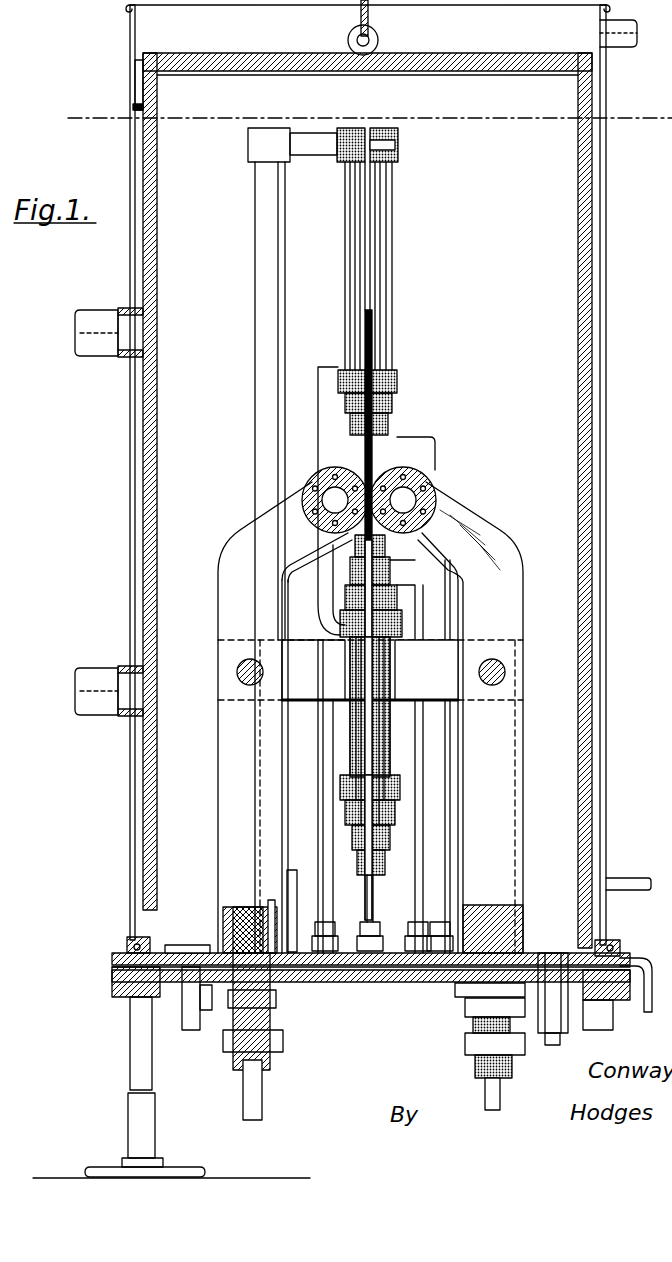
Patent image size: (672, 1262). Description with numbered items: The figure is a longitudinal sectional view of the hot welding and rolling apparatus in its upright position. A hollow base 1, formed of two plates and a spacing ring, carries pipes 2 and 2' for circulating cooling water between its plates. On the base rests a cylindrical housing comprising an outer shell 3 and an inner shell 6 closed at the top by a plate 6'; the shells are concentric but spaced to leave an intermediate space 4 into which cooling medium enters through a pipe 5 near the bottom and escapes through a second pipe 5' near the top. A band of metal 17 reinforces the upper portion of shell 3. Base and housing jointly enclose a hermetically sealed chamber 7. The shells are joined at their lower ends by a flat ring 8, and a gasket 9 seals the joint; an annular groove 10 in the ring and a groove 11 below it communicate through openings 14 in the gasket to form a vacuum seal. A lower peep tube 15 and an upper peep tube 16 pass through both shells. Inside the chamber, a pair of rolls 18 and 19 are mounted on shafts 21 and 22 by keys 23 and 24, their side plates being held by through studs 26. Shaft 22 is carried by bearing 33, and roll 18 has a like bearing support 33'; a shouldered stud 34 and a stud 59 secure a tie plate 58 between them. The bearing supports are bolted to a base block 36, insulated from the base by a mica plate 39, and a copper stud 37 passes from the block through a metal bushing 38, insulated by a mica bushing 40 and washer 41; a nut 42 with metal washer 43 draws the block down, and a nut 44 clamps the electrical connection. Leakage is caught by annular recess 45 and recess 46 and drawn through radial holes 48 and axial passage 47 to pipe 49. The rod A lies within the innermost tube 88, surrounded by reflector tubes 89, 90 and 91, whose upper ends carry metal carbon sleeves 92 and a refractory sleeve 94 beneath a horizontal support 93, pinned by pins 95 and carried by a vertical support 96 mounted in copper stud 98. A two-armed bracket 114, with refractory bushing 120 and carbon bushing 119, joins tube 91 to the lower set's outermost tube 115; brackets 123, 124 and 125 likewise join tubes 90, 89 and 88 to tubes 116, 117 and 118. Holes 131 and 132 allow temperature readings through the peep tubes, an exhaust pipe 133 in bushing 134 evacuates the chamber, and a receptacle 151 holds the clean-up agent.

The hollow base 1 is at (133, 977).
The pipe 2 is at (548, 1061).
The pipe 2' is at (145, 1087).
The outer shell 3 is at (69, 116).
The intermediate space 4 is at (140, 612).
The pipe 5 is at (628, 867).
The second pipe 5' is at (618, 46).
The inner shell 6 is at (367, 440).
The plate 6' is at (367, 47).
The hermetically sealed chamber 7 is at (500, 240).
The flat ring 8 is at (125, 947).
The gasket 9 is at (120, 956).
The annular groove 10 is at (128, 940).
The groove 11 is at (645, 962).
The openings 14 is at (118, 963).
The lower peep tube 15 is at (106, 705).
The upper peep tube 16 is at (103, 345).
The band of metal 17 is at (135, 75).
The roll 18 is at (303, 490).
The roll 19 is at (418, 488).
The shaft 21 is at (320, 480).
The shaft 22 is at (423, 495).
The key 23 is at (345, 480).
The key 24 is at (412, 482).
The through studs 26 is at (415, 500).
The bearing 33 is at (388, 717).
The bearing support 33' is at (323, 743).
The shouldered stud 34 is at (505, 670).
The base block 36 is at (225, 910).
The copper stud 37 is at (235, 1030).
The metal bushing 38 is at (277, 1000).
The mica plate 39 is at (218, 947).
The bushing 40 is at (190, 995).
The washer 41 is at (205, 1010).
The nut 42 is at (283, 1040).
The metal washer 43 is at (270, 1010).
The nut 44 is at (232, 1050).
The annular recess 45 is at (200, 950).
The recess 46 is at (248, 907).
The axial passage 47 is at (262, 1055).
The radial holes 48 is at (267, 914).
The pipe 49 is at (262, 1095).
The tie plate 58 is at (440, 660).
The stud 59 is at (237, 672).
The innermost tube 88 is at (375, 218).
The first reflector tube 89 is at (380, 238).
The second reflector tube 90 is at (385, 262).
The outermost reflector tube 91 is at (392, 283).
The metal carbon sleeve 92 is at (352, 128).
The horizontal metal support 93 is at (320, 156).
The sleeve 94 is at (388, 128).
The pins 95 is at (395, 145).
The vertical support 96 is at (255, 200).
The copper stud 98 is at (294, 905).
The two-armed bracket 114 is at (318, 367).
The outermost reflector tube 115 is at (355, 712).
The reflector tube 116 is at (362, 726).
The reflector tube 117 is at (375, 740).
The innermost tube 118 is at (383, 757).
The bushing 119 is at (397, 380).
The bushing 120 is at (392, 372).
The bracket 123 is at (373, 885).
The bracket 124 is at (420, 803).
The fourth bracket 125 is at (450, 830).
The hole 131 is at (345, 333).
The hole 132 is at (352, 692).
The pipe 133 is at (555, 953).
The bushing 134 is at (560, 1030).
The receptacle 151 is at (172, 945).
The rod A is at (436, 440).